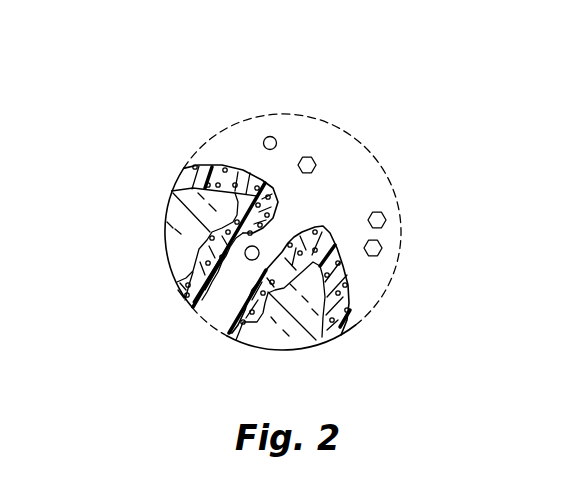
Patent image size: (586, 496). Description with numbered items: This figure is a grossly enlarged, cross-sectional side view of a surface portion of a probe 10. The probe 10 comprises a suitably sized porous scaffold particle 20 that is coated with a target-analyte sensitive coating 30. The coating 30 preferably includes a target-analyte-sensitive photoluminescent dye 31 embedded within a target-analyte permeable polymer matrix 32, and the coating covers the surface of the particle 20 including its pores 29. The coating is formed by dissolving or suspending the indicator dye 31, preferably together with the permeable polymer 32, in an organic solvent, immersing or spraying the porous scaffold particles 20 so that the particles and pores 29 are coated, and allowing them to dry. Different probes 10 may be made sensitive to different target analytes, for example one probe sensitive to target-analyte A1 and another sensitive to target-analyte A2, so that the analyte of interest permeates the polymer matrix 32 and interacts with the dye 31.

The probe 10 is at (170, 110).
The porous scaffold particle 20 is at (171, 217).
The pores 29 is at (282, 230).
The target-analyte sensitive coating 30 is at (336, 271).
The target-analyte-sensitive photoluminescent dye 31 is at (183, 179).
The target-analyte permeable polymer matrix 32 is at (336, 336).
The target-analyte A1 is at (272, 137).
The target-analyte A2 is at (378, 221).